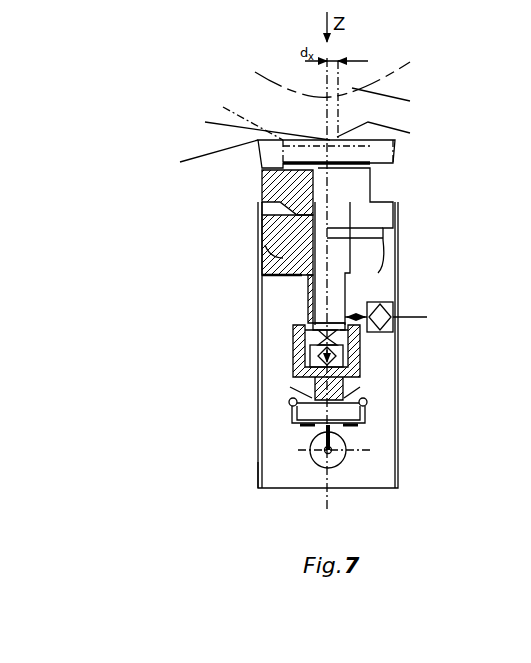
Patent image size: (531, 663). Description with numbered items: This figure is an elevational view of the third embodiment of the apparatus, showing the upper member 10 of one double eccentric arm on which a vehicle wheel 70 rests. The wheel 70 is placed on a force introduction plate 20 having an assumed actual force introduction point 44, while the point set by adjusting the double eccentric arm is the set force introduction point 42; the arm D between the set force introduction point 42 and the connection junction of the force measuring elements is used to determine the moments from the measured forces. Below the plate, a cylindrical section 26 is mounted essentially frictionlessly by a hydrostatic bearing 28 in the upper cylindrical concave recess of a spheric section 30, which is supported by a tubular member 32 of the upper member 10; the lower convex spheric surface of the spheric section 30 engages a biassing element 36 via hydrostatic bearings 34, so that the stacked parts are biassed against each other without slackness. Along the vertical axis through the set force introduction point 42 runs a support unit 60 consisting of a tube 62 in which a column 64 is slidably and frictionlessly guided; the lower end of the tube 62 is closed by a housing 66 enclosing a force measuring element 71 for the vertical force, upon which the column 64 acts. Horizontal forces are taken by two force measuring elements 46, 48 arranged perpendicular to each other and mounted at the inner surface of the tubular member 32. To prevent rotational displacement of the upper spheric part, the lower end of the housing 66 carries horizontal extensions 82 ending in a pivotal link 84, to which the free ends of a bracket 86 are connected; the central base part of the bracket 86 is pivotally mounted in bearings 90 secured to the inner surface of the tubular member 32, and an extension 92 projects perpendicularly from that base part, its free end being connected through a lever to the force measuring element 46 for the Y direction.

The upper member 10 is at (160, 437).
The force introduction plate 20 is at (180, 162).
The cylindrical section 26 is at (262, 200).
The hydrostatic bearing 28 is at (280, 215).
The spheric section 30 is at (268, 235).
The tubular member 32 is at (397, 385).
The hydrostatic bearings 34 is at (283, 255).
The biassing element 36 is at (300, 268).
The set force introduction point 42 is at (205, 122).
The actual force introduction point 44 is at (410, 133).
The force measuring element 46 is at (258, 462).
The force measuring element 48 is at (395, 330).
The support unit 60 is at (337, 295).
The tube 62 is at (325, 293).
The column 64 is at (318, 326).
The housing 66 is at (295, 352).
The wheel 70 is at (410, 101).
The force measuring element 71 is at (300, 363).
The horizontal extensions 82 is at (290, 387).
The pivotal link 84 is at (292, 405).
The bracket 86 is at (300, 425).
The bearings 90 is at (302, 428).
The extension 92 is at (357, 450).
The arm D is at (392, 166).